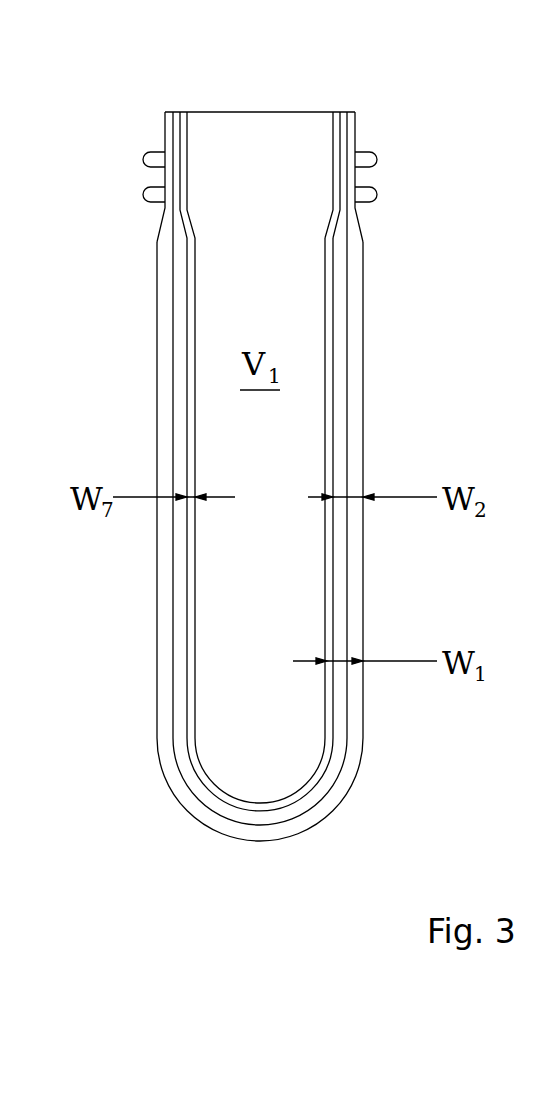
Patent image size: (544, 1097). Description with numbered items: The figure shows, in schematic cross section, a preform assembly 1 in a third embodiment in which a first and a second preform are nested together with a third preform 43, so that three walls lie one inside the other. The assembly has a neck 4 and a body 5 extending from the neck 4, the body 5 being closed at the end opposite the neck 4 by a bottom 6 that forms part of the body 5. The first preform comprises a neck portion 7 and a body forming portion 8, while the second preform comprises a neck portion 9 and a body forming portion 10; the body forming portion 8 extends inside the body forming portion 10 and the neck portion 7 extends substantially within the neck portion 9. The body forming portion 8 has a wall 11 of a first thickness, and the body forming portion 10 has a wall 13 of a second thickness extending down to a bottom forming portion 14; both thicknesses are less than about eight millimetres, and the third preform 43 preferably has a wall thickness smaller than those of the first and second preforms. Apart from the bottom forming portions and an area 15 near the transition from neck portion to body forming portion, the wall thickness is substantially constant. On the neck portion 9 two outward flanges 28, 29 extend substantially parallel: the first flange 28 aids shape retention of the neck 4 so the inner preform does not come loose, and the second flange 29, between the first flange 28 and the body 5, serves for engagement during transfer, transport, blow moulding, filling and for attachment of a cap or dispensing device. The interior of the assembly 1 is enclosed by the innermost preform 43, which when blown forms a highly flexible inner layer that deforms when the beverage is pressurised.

The preform assembly 1 is at (358, 108).
The neck 4 is at (383, 177).
The body 5 is at (387, 455).
The bottom 6 is at (302, 843).
The neck portion of the first preform 7 is at (343, 140).
The body forming portion of the first preform 8 is at (333, 408).
The neck portion of the second preform 9 is at (356, 135).
The body forming portion of the second preform 10 is at (363, 573).
The wall of the first preform 11 is at (355, 352).
The wall of the second preform 13 is at (340, 622).
The bottom forming portion of the second preform 14 is at (318, 792).
The area near the transition of the neck portion to the body forming portion 15 is at (345, 780).
The first flange 28 is at (372, 159).
The second flange 29 is at (372, 195).
The third preform 43 is at (182, 138).